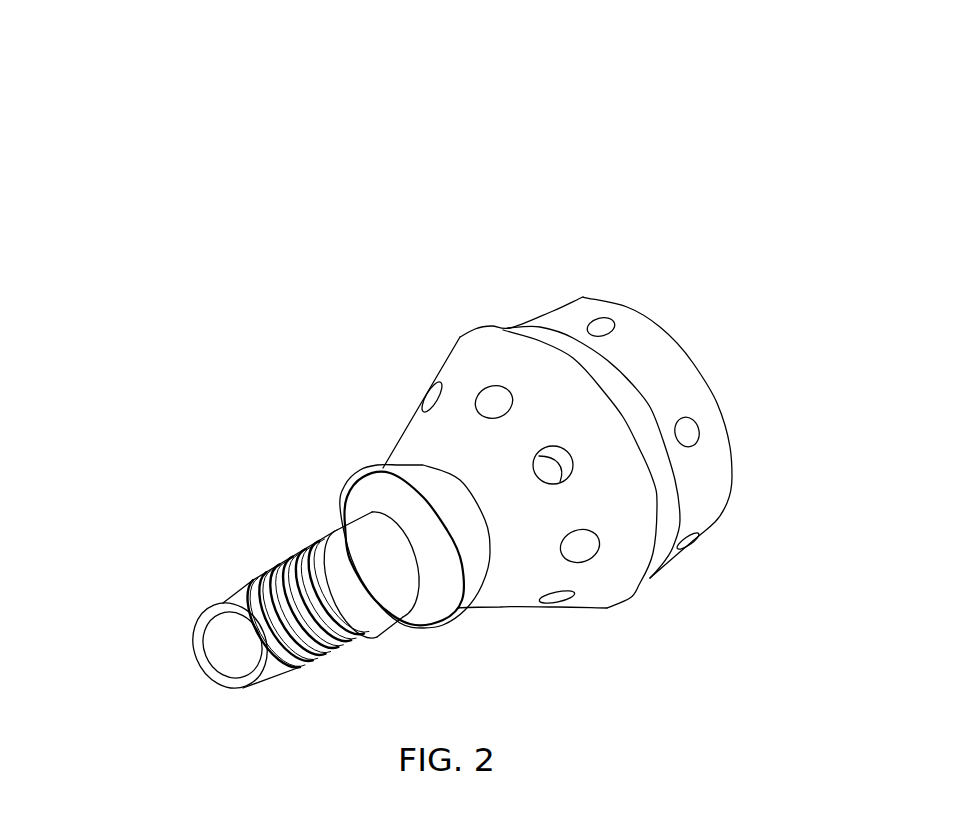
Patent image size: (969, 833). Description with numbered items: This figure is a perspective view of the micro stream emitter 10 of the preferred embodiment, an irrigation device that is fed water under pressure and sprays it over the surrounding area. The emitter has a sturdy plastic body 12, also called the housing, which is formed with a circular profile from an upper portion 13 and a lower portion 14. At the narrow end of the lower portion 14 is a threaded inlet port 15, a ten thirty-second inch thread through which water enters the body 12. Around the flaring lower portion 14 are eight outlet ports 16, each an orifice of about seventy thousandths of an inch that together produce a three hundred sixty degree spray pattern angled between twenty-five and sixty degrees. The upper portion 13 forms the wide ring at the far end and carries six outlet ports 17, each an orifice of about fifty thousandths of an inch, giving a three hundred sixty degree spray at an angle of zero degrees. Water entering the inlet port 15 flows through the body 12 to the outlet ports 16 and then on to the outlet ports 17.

The micro stream emitter 10 is at (445, 376).
The body 12 is at (450, 258).
The upper portion 13 is at (683, 397).
The lower portion 14 is at (482, 524).
The threaded inlet port 15 is at (156, 643).
The outlet ports 16 is at (650, 634).
The outlet ports 17 is at (691, 278).